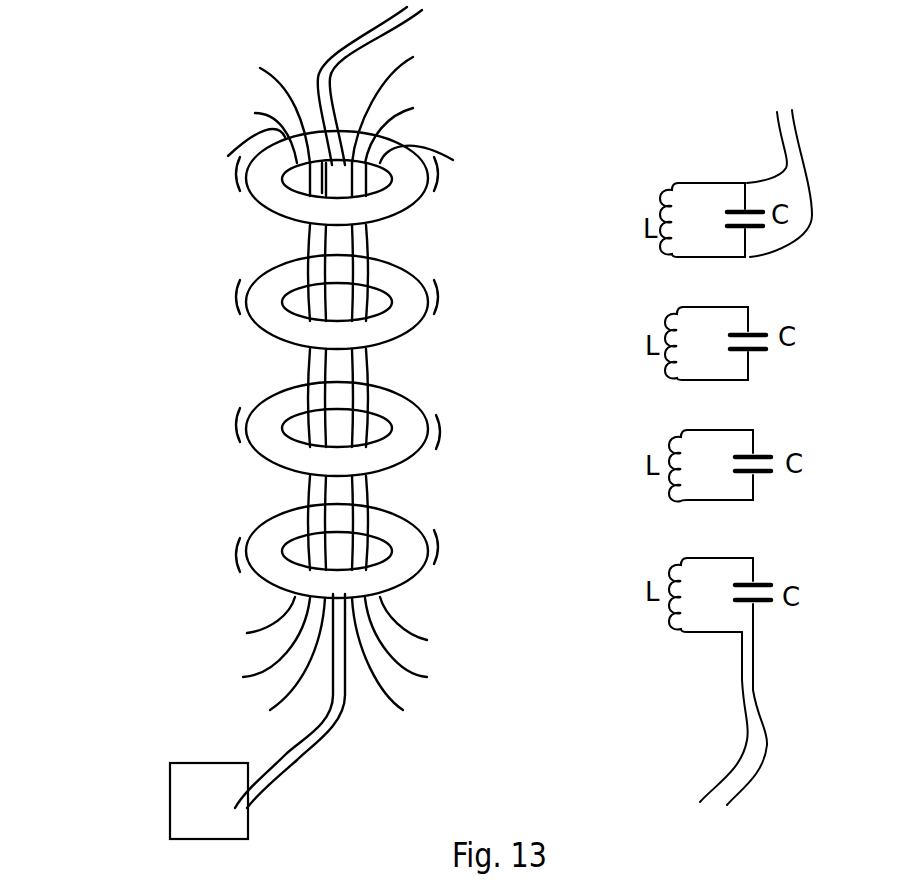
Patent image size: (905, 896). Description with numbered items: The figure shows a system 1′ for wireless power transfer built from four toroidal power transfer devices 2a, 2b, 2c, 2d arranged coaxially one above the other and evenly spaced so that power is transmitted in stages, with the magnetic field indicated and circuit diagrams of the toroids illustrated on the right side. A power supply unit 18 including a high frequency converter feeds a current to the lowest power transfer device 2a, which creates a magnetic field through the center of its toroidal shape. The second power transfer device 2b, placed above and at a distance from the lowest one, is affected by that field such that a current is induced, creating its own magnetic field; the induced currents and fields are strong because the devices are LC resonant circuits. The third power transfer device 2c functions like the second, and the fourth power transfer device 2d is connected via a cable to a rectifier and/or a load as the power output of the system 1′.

The system for wireless power transfer 1′ is at (289, 407).
The lowest power transfer device 2a is at (413, 546).
The second power transfer device 2b is at (432, 418).
The third power transfer device 2c is at (433, 300).
The fourth power transfer device 2d is at (435, 165).
The power supply unit 18 is at (190, 803).